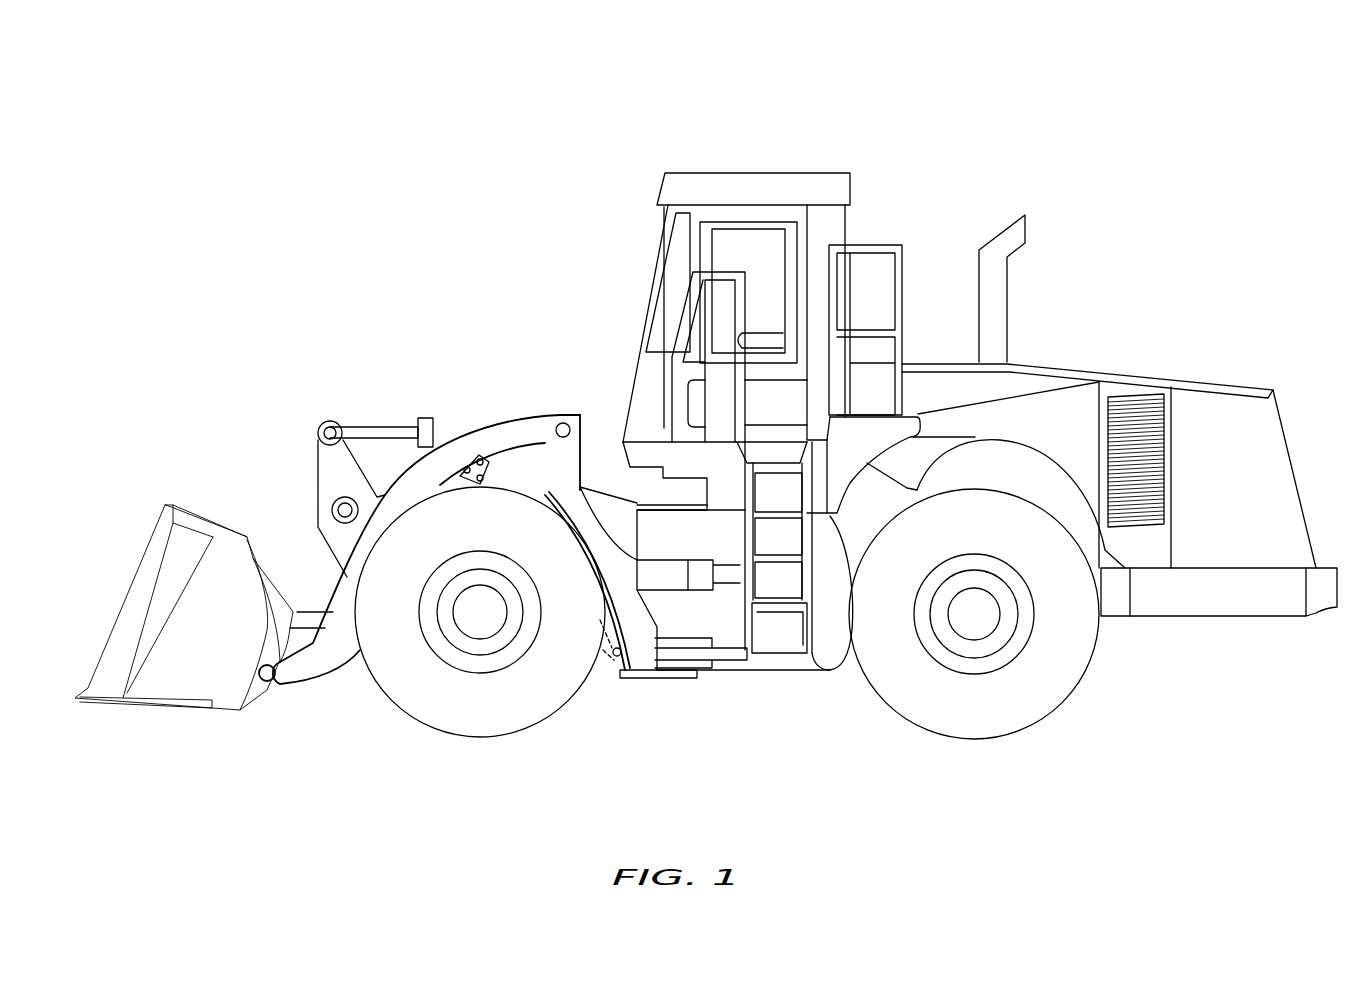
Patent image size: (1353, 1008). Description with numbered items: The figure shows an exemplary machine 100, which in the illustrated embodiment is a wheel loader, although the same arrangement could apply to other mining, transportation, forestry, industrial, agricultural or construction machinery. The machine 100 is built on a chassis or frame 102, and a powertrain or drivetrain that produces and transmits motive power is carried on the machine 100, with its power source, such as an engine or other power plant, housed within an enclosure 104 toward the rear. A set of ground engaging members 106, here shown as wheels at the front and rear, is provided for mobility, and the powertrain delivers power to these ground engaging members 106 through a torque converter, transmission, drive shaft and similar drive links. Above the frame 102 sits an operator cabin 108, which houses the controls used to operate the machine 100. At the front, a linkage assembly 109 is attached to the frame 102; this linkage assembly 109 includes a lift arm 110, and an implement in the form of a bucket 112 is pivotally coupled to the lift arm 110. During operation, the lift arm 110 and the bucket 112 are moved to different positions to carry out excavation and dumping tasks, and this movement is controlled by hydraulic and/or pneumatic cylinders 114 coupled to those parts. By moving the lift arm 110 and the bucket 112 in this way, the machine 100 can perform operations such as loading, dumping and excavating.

The machine 100 is at (1137, 112).
The frame 102 is at (750, 672).
The enclosure 104 is at (1193, 380).
The ground engaging members 106 is at (473, 737).
The operator cabin 108 is at (757, 172).
The linkage assembly 109 is at (293, 558).
The lift arm 110 is at (327, 683).
The bucket 112 is at (218, 630).
The hydraulic and/or pneumatic cylinders 114 is at (428, 417).